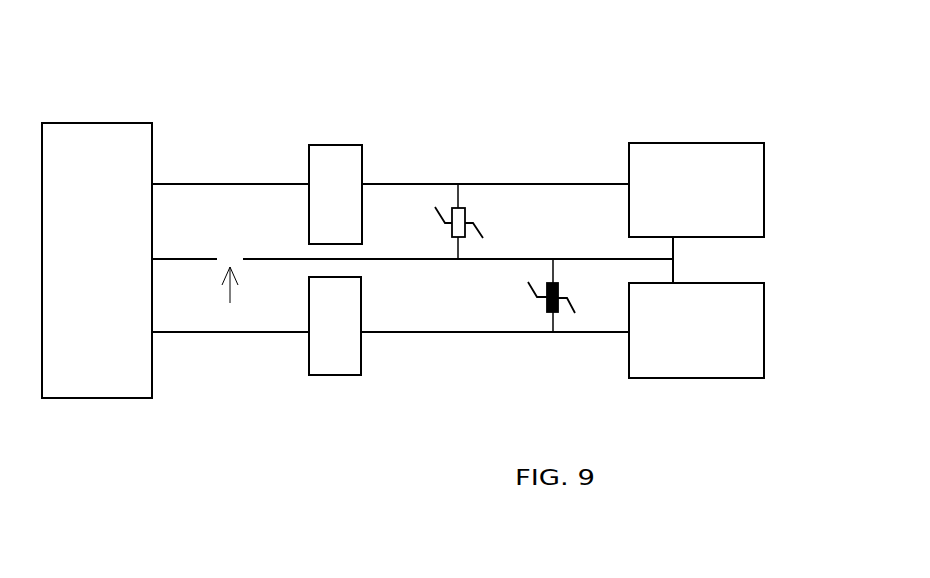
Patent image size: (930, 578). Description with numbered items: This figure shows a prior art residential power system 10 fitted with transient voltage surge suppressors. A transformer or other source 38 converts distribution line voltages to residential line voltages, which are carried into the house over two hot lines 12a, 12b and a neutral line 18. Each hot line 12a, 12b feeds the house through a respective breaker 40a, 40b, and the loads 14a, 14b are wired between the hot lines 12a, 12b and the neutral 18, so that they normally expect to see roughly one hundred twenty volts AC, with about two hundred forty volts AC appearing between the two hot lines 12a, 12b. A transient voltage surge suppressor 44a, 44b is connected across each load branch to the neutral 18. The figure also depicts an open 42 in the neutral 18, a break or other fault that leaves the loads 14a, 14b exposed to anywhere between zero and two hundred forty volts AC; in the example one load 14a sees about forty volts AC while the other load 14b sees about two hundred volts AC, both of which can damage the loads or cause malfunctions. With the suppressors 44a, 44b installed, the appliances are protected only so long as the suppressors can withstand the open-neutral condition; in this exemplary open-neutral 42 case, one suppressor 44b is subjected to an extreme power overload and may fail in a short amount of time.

The residential power system 10 is at (745, 69).
The hot line 12a is at (390, 153).
The hot line 12b is at (390, 361).
The load 14a is at (722, 175).
The load 14b is at (728, 357).
The neutral line 18 is at (412, 280).
The transformer or other source 38 is at (120, 245).
The breaker 40a is at (367, 175).
The breaker 40b is at (371, 340).
The open neutral fault 42 is at (249, 292).
The transient voltage surge suppressor 44a is at (486, 194).
The transient voltage surge suppressor 44b is at (515, 318).